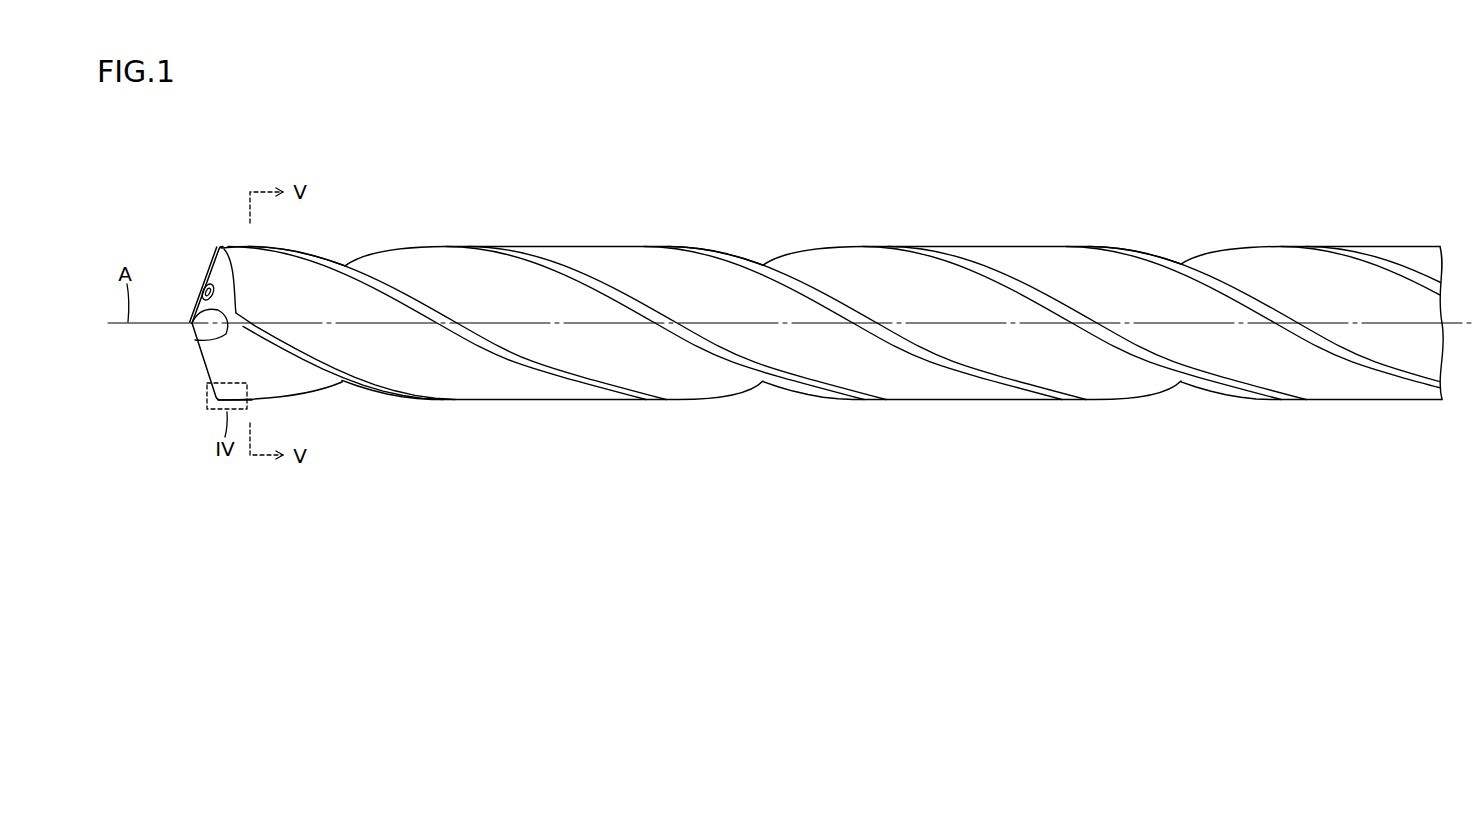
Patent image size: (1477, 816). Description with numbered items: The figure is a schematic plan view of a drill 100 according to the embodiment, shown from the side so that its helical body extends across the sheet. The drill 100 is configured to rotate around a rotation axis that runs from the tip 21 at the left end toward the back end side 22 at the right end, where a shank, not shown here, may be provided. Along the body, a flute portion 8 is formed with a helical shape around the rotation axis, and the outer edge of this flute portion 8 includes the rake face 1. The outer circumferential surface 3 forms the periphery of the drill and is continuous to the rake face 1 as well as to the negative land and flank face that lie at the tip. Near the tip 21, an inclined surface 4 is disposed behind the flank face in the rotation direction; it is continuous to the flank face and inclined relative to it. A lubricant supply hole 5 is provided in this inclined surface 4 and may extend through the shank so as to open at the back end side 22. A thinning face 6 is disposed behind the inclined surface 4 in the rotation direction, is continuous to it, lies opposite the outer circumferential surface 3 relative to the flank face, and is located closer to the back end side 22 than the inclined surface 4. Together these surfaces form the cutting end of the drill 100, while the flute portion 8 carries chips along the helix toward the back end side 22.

The drill 100 is at (1163, 163).
The rake face 1 is at (222, 353).
The outer circumferential surface 3 is at (287, 292).
The inclined surface 4 is at (223, 262).
The lubricant supply hole 5 is at (205, 288).
The thinning face 6 is at (203, 317).
The flute portion 8 is at (423, 263).
The tip 21 is at (190, 323).
The back end side 22 is at (1443, 325).